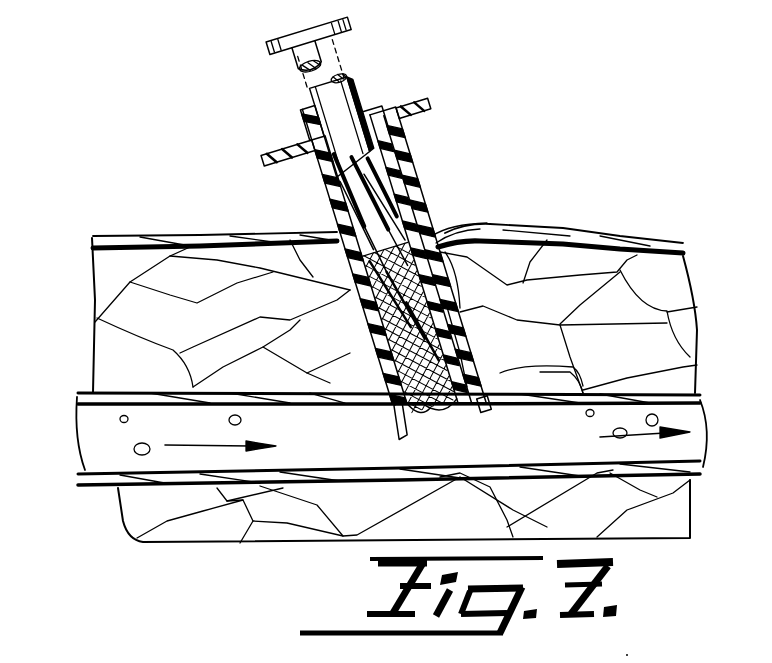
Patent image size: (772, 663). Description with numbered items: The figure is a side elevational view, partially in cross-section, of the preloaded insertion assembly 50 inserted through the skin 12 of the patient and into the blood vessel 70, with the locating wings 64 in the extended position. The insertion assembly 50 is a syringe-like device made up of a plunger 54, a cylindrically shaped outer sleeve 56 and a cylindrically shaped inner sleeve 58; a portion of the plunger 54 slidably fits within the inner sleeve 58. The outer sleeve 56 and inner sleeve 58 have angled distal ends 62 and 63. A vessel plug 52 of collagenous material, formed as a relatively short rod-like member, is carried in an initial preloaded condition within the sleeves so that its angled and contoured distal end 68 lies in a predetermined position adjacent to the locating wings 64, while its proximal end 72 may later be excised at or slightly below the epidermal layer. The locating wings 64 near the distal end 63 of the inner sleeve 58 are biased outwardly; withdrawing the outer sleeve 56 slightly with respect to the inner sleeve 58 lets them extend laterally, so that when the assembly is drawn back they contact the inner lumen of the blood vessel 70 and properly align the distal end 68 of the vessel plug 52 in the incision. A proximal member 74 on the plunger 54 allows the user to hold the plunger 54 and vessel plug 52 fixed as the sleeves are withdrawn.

The skin 12 is at (134, 345).
The preloaded insertion assembly 50 is at (275, 201).
The vessel plug 52 is at (483, 223).
The plunger 54 is at (332, 106).
The outer sleeve 56 is at (403, 157).
The inner sleeve 58 is at (364, 110).
The angled distal end of outer sleeve 62 is at (393, 413).
The distal end of inner sleeve 63 is at (470, 410).
The locating wings 64 is at (493, 410).
The distal end of vessel plug 68 is at (443, 413).
The blood vessel 70 is at (107, 442).
The proximal end of vessel plug 72 is at (413, 203).
The proximal member 74 is at (300, 33).